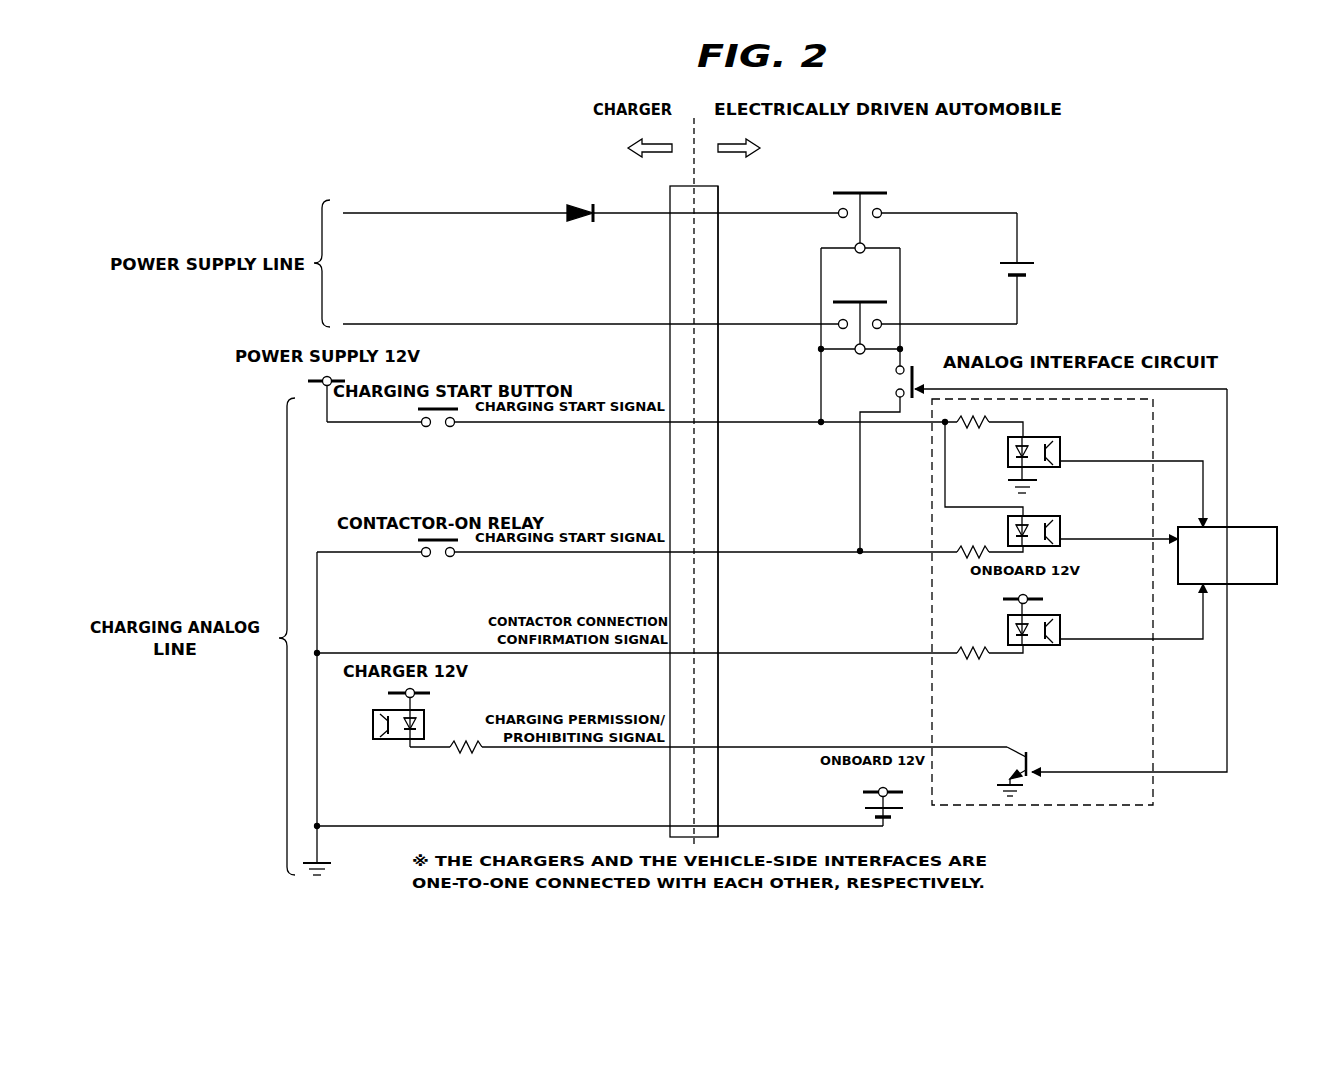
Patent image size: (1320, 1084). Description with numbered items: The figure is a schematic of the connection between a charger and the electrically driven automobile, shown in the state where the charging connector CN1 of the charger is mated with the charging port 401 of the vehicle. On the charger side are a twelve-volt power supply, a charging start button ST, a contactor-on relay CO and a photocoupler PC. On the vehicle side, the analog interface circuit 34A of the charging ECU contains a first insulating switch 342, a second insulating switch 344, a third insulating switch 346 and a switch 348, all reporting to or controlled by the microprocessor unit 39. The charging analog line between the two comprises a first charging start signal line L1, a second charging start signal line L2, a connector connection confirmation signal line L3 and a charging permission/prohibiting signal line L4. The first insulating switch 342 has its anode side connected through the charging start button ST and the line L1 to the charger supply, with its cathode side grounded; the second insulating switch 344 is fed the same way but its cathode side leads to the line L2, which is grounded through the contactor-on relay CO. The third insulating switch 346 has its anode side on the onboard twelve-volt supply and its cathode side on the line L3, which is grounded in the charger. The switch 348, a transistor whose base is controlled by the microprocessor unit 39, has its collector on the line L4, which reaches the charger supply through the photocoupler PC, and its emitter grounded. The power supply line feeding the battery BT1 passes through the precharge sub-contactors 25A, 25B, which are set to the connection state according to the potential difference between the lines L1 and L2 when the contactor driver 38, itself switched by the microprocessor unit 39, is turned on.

The precharge sub-contactor 25A is at (870, 192).
The precharge sub-contactor 25B is at (893, 312).
The battery BT1 is at (1022, 258).
The charging connector CN1 is at (670, 256).
The charging port 401 is at (718, 256).
The contactor driver 38 is at (895, 383).
The first charging start signal line L1 is at (764, 420).
The second charging start signal line L2 is at (764, 550).
The connector connection confirmation signal line L3 is at (764, 651).
The charging permission/prohibiting signal line L4 is at (764, 746).
The charging start button ST is at (437, 428).
The contactor-on relay CO is at (437, 558).
The photocoupler PC is at (426, 719).
The first insulating switch 342 is at (1060, 447).
The second insulating switch 344 is at (1060, 526).
The third insulating switch 346 is at (1060, 626).
The switch 348 is at (1032, 760).
The MPU 39 is at (1262, 584).
The analog interface circuit 34A is at (1057, 805).